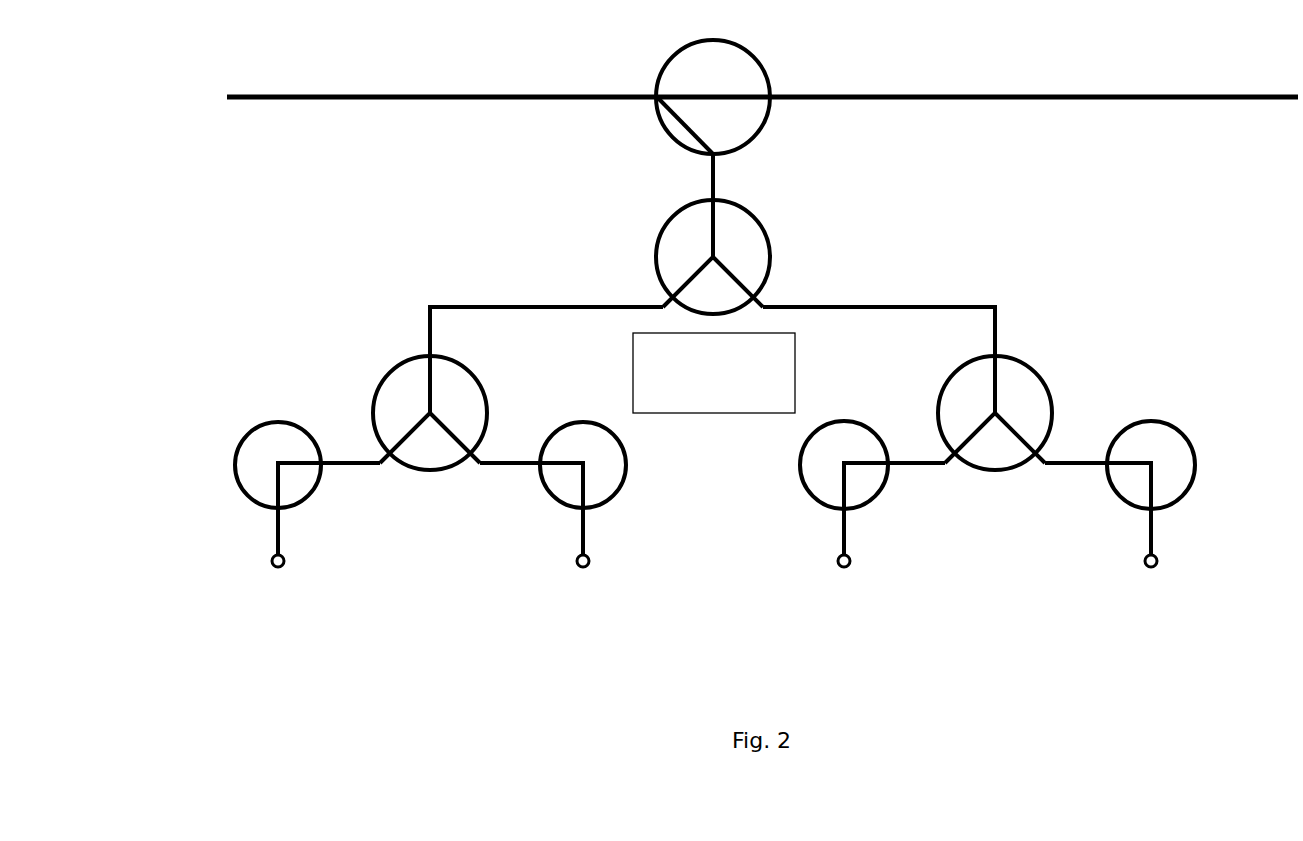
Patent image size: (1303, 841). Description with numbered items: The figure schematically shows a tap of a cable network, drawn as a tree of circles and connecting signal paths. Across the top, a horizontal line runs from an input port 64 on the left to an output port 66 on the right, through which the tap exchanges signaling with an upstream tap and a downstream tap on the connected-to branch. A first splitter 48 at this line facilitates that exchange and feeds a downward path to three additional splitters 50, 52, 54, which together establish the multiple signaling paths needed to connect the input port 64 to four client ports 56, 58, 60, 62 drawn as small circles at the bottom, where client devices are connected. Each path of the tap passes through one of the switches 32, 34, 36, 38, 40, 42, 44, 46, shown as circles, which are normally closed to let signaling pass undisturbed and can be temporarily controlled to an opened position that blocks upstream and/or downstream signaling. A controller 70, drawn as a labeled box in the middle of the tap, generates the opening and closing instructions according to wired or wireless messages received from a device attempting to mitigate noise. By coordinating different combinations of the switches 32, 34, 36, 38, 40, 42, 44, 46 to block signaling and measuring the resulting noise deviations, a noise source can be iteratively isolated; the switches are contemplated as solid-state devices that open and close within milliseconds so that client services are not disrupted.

The switch 32 is at (669, 48).
The switch 34 is at (677, 206).
The switch 36 is at (396, 362).
The switch 38 is at (1036, 368).
The switch 40 is at (261, 425).
The switch 42 is at (566, 425).
The switch 44 is at (870, 425).
The fourth vessel 46 is at (1184, 425).
The first splitter 48 is at (656, 104).
The splitter 50 is at (716, 250).
The splitter 52 is at (436, 405).
The splitter 54 is at (992, 406).
The client port 56 is at (286, 557).
The client port 58 is at (590, 557).
The client port 60 is at (850, 557).
The client port 62 is at (1157, 557).
The input port 64 is at (227, 90).
The output port 66 is at (1297, 90).
The controller 70 is at (633, 383).